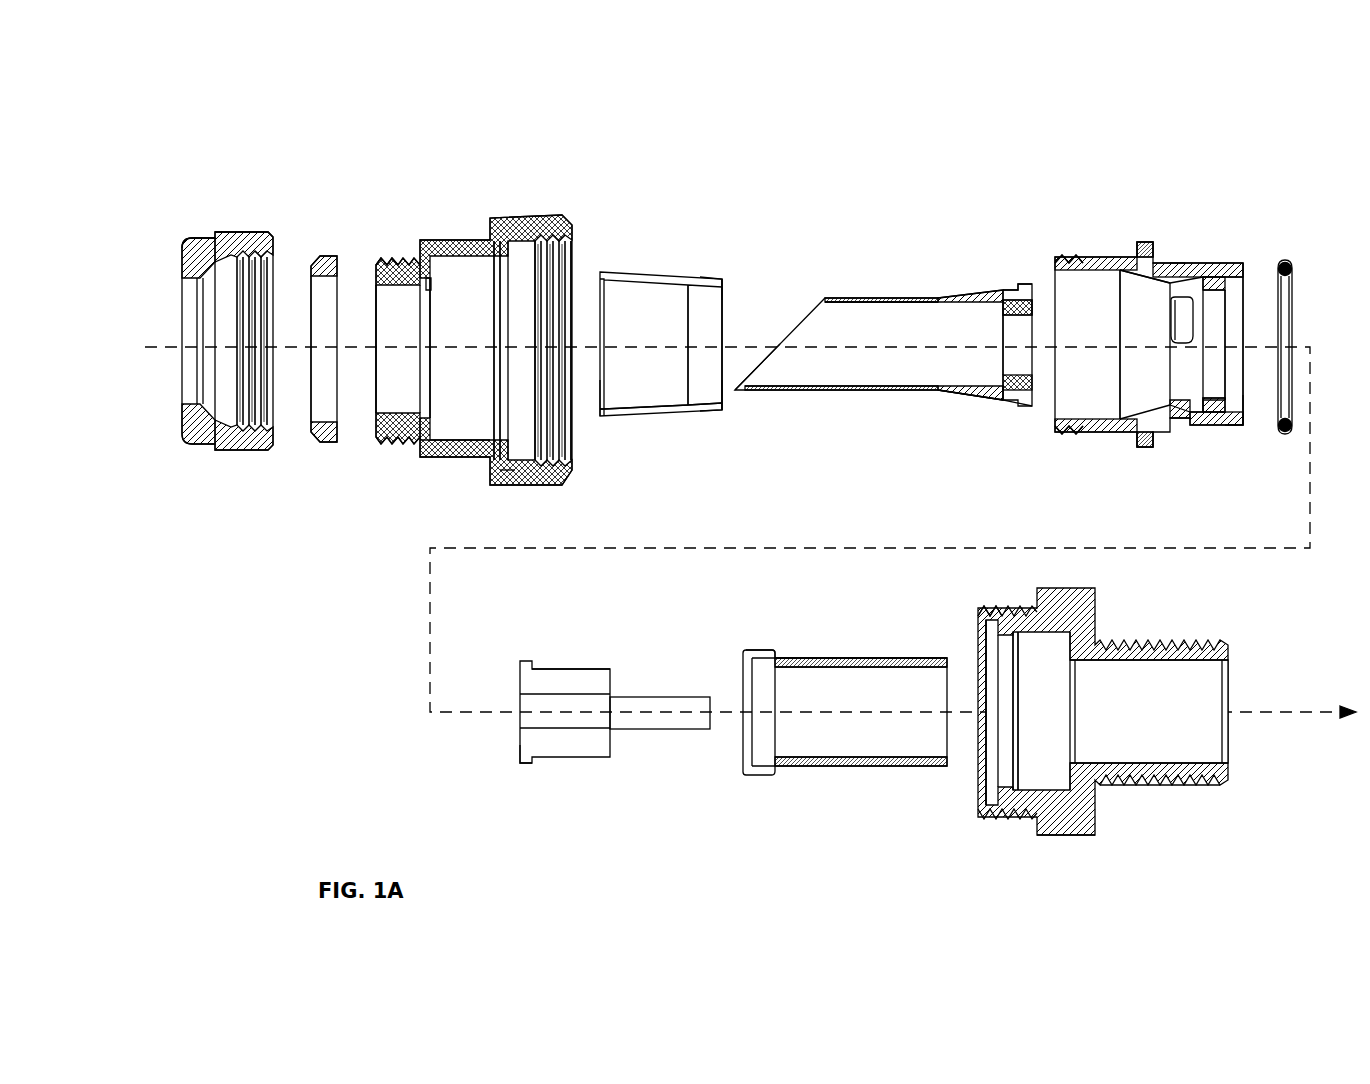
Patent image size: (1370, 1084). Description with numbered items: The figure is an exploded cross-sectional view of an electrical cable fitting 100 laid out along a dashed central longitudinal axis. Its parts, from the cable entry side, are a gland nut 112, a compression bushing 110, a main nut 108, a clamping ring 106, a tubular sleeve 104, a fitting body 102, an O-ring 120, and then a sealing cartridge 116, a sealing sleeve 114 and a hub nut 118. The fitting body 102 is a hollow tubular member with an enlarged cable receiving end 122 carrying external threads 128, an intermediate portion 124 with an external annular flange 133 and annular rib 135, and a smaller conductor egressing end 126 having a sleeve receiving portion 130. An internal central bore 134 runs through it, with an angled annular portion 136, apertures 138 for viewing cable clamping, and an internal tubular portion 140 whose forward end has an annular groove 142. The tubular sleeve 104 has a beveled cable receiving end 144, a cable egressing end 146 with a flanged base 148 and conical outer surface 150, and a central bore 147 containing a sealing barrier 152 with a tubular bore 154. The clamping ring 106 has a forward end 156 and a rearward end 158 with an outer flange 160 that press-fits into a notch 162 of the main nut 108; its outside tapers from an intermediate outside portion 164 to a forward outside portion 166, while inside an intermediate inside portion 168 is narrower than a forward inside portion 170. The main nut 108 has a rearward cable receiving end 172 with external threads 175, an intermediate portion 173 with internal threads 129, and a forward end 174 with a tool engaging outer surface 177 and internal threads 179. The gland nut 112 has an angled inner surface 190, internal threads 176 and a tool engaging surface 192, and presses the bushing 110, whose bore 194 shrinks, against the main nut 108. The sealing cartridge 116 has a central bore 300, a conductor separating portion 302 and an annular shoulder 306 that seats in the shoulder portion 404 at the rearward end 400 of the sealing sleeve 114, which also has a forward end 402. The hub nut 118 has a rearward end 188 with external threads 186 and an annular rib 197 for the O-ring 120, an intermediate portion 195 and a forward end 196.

The electrical cable fitting 100 is at (825, 190).
The fitting body 102 is at (1140, 190).
The tubular sleeve 104 is at (872, 276).
The clamping ring 106 is at (645, 250).
The main nut 108 is at (468, 212).
The compression bushing 110 is at (330, 256).
The gland nut 112 is at (245, 488).
The sealing sleeve 114 is at (822, 800).
The sealing cartridge 116 is at (552, 797).
The hub nut 118 is at (1152, 612).
The O-ring 120 is at (1293, 292).
The cable receiving end 122 is at (1060, 242).
The intermediate portion 124 is at (1157, 452).
The conductor egressing end 126 is at (1234, 242).
The external threads 128 is at (1070, 438).
The internal threads 129 is at (503, 250).
The sleeve receiving portion 130 is at (1248, 330).
The external annular flange 133 is at (1143, 242).
The internal central bore 134 is at (1103, 344).
The annular rib 135 is at (1180, 263).
The angled annular portion 136 is at (1150, 280).
The apertures 138 is at (1180, 408).
The internal tubular portion 140 is at (1215, 397).
The annular groove 142 is at (1240, 408).
The cable receiving end 144 is at (757, 392).
The cable egressing end 146 is at (1002, 412).
The central bore 147 is at (881, 319).
The flanged base 148 is at (997, 272).
The conical outer surface 150 is at (972, 400).
The sealing barrier 152 is at (1003, 312).
The tubular bore 154 is at (1020, 359).
The forward end 156 is at (724, 272).
The rearward end 158 is at (606, 430).
The outer flange 160 is at (606, 412).
The notch 162 is at (428, 283).
The intermediate outside portion 164 is at (680, 414).
The forward outside portion 166 is at (723, 412).
The intermediate inside portion 168 is at (686, 287).
The forward inside portion 170 is at (426, 296).
The rearward cable receiving end 172 is at (394, 456).
The intermediate portion 173 is at (458, 470).
The forward end 174 is at (549, 492).
The external threads 175 is at (388, 260).
The internal threads 176 is at (268, 258).
The tool engaging outer surface 177 is at (512, 486).
The internal threads 179 is at (566, 236).
The external threads 186 is at (1018, 818).
The rearward end 188 is at (977, 817).
The angled inner surface 190 is at (237, 224).
The tool engaging surface 192 is at (258, 235).
The bore 194 is at (318, 402).
The intermediate portion 195 is at (1059, 840).
The forward end 196 is at (1180, 795).
The annular rib 197 is at (1006, 655).
The central bore 300 is at (669, 727).
The conductor separating portion 302 is at (567, 668).
The annular shoulder 306 is at (520, 762).
The rearward end 400 is at (752, 648).
The forward end 402 is at (893, 658).
The shoulder portion 404 is at (780, 655).